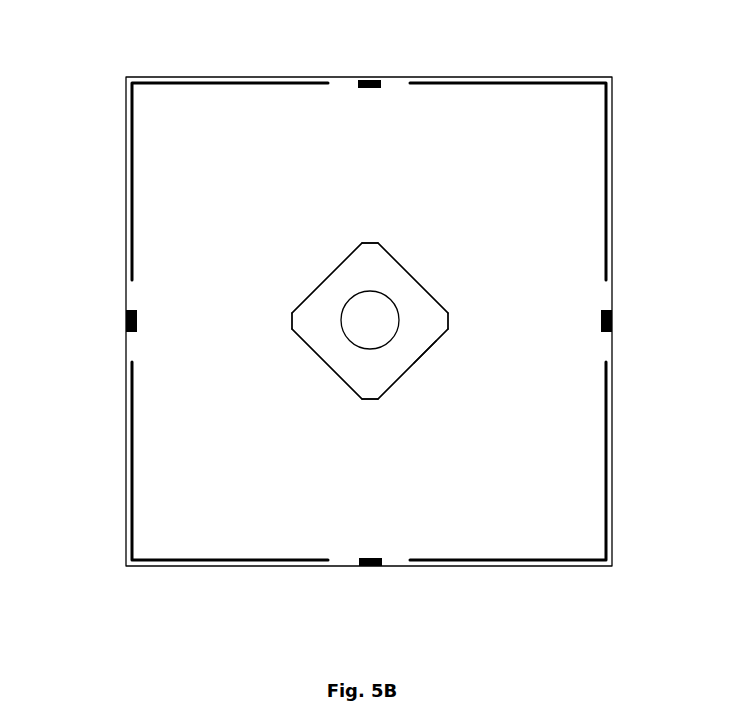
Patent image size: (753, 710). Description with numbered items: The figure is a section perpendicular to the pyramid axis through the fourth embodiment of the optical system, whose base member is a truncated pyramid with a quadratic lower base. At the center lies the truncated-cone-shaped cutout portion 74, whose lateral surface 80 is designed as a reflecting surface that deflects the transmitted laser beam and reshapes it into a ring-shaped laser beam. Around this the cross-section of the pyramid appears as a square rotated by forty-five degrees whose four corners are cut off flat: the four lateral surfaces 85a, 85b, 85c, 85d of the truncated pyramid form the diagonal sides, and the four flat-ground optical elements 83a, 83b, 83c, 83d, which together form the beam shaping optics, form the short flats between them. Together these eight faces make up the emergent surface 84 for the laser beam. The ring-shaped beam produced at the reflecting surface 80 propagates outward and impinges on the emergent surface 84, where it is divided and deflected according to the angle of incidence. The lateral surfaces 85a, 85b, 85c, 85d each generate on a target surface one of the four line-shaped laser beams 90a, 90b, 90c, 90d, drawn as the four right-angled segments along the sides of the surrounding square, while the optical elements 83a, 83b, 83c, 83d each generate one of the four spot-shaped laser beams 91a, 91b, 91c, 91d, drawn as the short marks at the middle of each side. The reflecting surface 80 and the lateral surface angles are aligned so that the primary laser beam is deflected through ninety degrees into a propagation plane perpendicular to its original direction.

The truncated-cone-shaped cutout portion 74 is at (370, 320).
The lateral surface of the cutout portion 80 is at (383, 292).
The optical element 83a is at (448, 320).
The optical element 83b is at (370, 399).
The optical element 83c is at (292, 321).
The optical element 83d is at (370, 243).
The emergent surface 84 is at (424, 354).
The lateral surface of the truncated pyramid 85a is at (399, 375).
The lateral surface of the truncated pyramid 85b is at (327, 366).
The lateral surface of the truncated pyramid 85c is at (323, 282).
The lateral surface of the truncated pyramid 85d is at (424, 286).
The line-shaped laser beam 90a is at (535, 560).
The line-shaped laser beam 90b is at (220, 560).
The line-shaped laser beam 90c is at (220, 83).
The line-shaped laser beam 90d is at (540, 83).
The spot-shaped laser beam 91a is at (612, 321).
The spot-shaped laser beam 91b is at (371, 566).
The spot-shaped laser beam 91c is at (126, 321).
The spot-shaped laser beam 91d is at (370, 80).